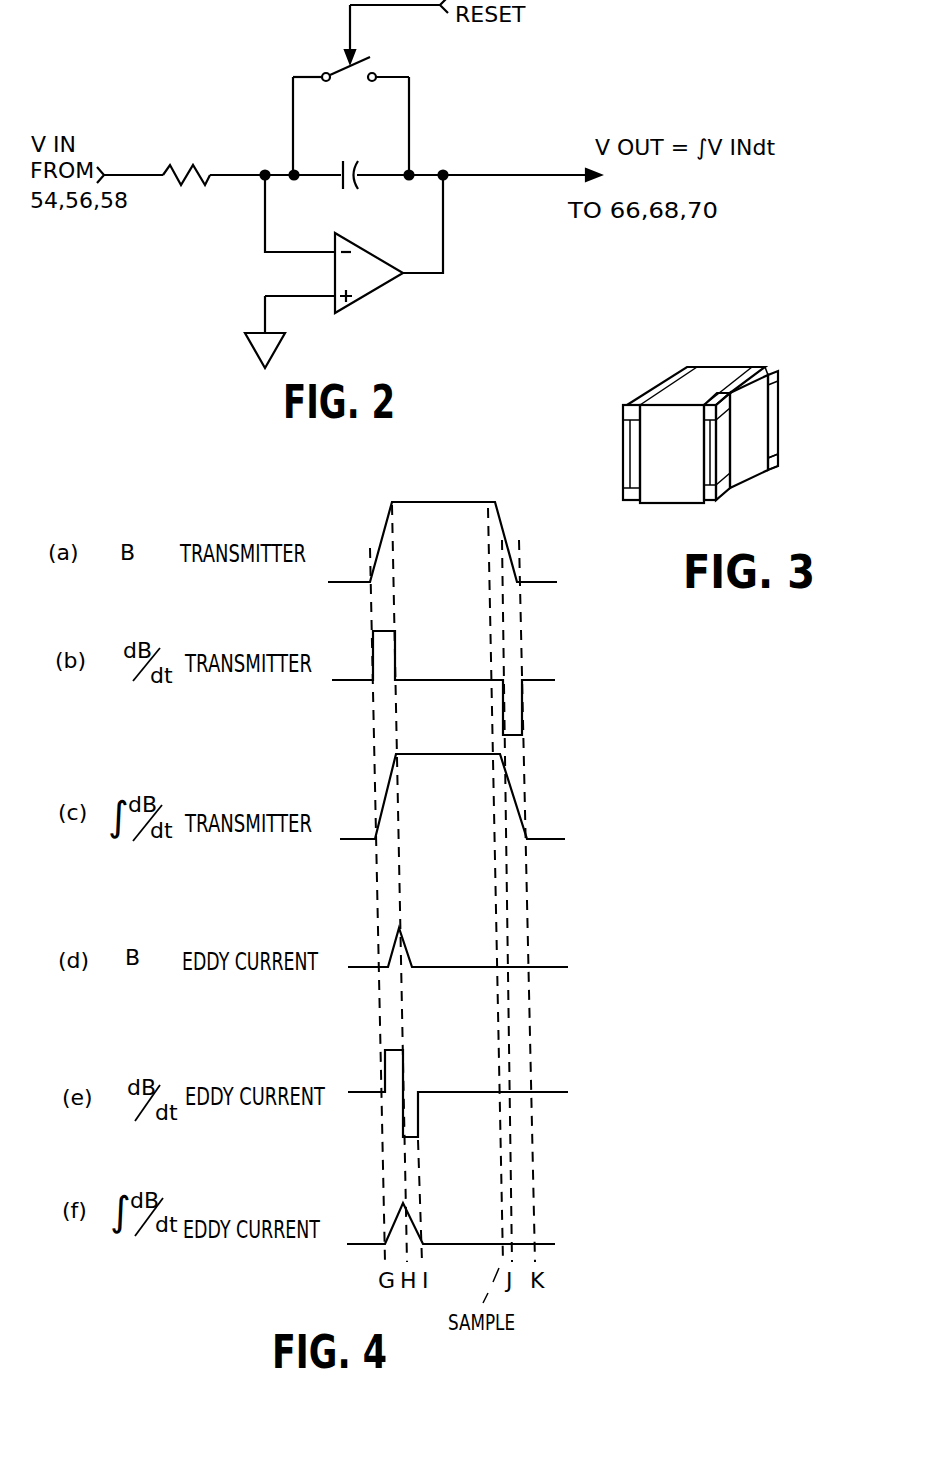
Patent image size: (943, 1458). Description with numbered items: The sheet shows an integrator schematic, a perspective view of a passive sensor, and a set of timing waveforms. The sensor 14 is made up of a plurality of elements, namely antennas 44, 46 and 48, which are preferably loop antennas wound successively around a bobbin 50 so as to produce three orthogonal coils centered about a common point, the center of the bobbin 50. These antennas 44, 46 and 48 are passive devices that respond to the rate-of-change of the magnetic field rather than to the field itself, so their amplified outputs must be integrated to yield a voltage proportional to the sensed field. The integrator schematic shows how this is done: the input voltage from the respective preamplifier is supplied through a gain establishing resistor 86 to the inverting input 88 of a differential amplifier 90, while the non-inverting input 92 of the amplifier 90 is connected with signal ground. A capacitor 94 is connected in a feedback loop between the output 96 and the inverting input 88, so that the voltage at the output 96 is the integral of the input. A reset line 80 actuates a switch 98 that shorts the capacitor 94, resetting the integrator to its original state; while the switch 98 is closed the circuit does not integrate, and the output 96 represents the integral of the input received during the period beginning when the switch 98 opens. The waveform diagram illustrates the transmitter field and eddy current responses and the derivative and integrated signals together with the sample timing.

In FIG. 2, the reset line 80 is at (393, 7).
In FIG. 2, the switch 98 is at (376, 70).
In FIG. 2, the gain establishing resistor 86 is at (189, 168).
In FIG. 2, the inverting input 88 is at (266, 228).
In FIG. 2, the capacitor 94 is at (354, 182).
In FIG. 2, the output 96 is at (444, 230).
In FIG. 2, the non-inverting input 92 is at (291, 295).
In FIG. 2, the differential amplifier 90 is at (366, 292).
In FIG. 3, the sensor 14 is at (711, 370).
In FIG. 3, the antenna 48 is at (719, 368).
In FIG. 3, the antenna 46 is at (779, 381).
In FIG. 3, the antenna 44 is at (780, 424).
In FIG. 3, the bobbin 50 is at (777, 464).